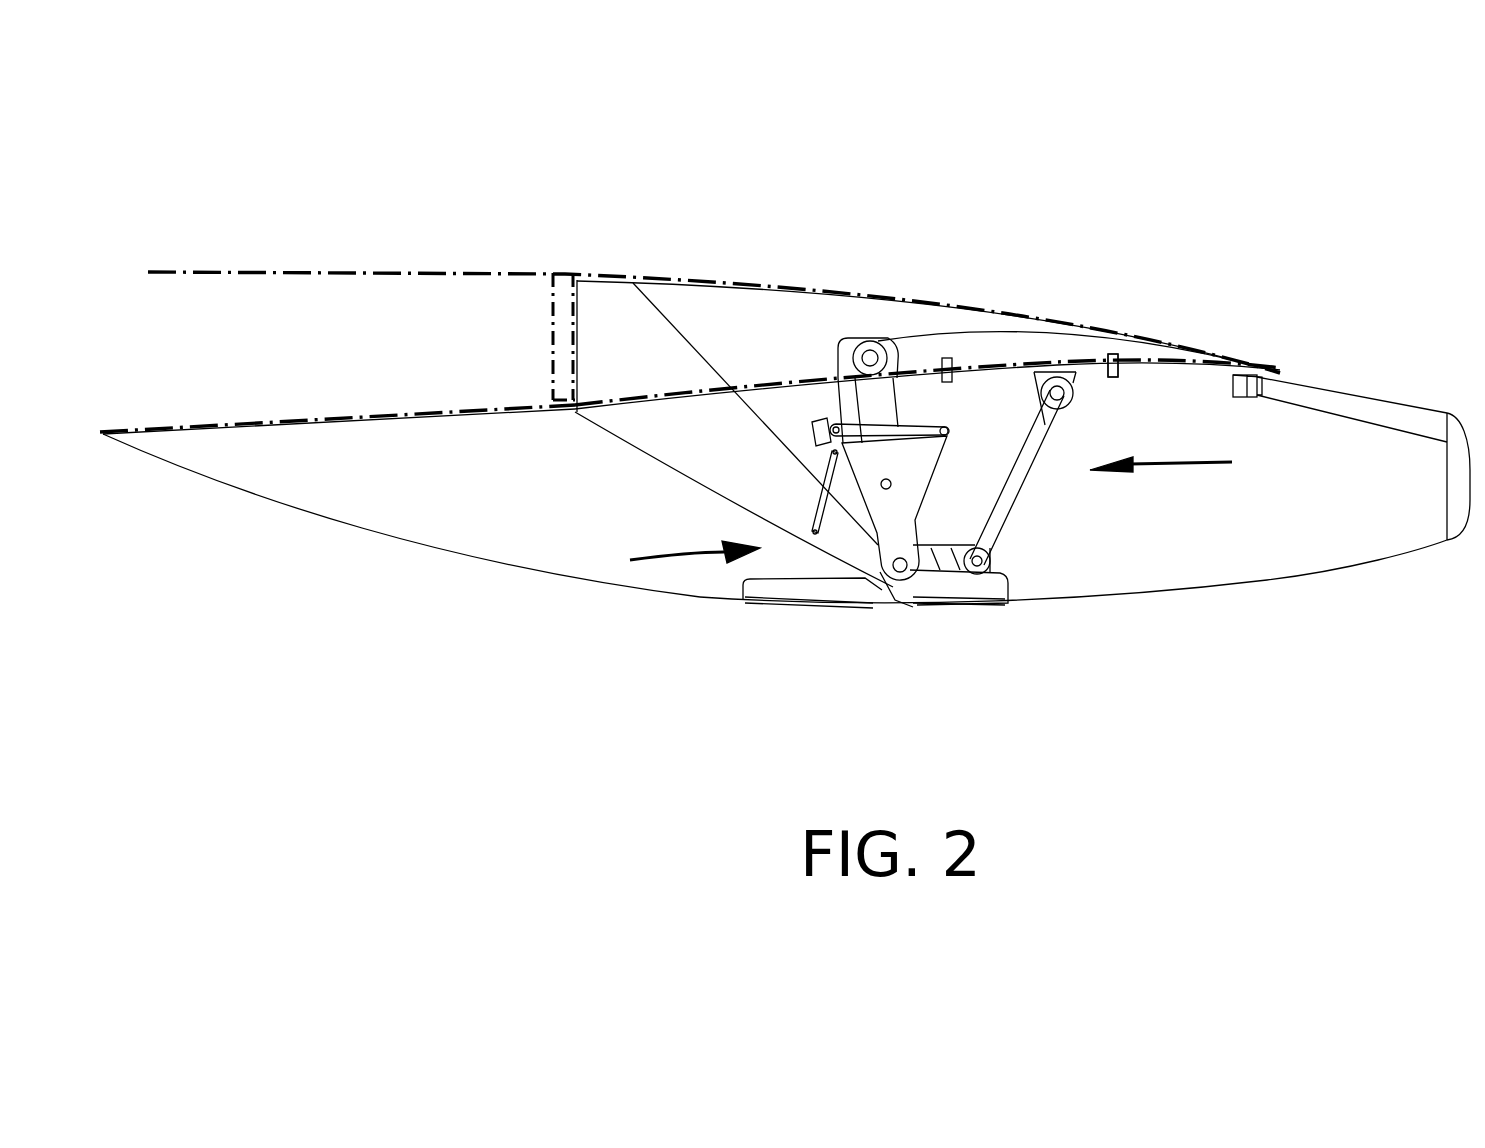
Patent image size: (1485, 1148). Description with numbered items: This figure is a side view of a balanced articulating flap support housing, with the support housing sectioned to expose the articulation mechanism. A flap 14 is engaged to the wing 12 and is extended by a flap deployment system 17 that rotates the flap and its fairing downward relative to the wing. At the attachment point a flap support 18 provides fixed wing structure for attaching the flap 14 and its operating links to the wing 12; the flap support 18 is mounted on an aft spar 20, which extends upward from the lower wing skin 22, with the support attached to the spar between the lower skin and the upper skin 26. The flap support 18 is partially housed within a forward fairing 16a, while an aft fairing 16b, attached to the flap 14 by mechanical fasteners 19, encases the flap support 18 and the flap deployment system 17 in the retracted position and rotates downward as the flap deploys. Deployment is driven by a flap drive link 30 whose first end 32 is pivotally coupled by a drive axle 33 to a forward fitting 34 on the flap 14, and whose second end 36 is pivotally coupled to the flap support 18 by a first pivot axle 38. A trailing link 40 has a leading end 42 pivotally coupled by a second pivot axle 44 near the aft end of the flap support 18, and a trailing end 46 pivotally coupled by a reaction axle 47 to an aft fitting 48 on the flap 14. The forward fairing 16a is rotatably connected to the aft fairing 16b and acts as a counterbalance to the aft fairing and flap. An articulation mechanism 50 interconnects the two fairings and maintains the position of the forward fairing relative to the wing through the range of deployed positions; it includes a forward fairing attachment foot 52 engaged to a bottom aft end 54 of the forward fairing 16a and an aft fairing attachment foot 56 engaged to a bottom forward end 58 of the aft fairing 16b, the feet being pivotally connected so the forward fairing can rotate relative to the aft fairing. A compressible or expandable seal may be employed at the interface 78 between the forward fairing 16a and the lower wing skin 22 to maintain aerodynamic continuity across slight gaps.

The wing 12 is at (463, 320).
The flap 14 is at (1100, 345).
The forward fairing 16a is at (432, 505).
The aft fairing 16b is at (1232, 552).
The flap deployment system 17 is at (1184, 463).
The flap support 18 is at (753, 468).
The mechanical fasteners 19 is at (947, 357).
The aft spar 20 is at (562, 327).
The lower wing skin 22 is at (377, 420).
The upper skin 26 is at (327, 270).
The flap drive link 30 is at (892, 512).
The first end 32 is at (883, 380).
The drive axle 33 is at (870, 380).
The forward fitting 34 is at (843, 340).
The second end 36 is at (967, 588).
The first pivot axle 38 is at (898, 567).
The trailing link 40 is at (1020, 477).
The leading end 42 is at (987, 540).
The second pivot axle 44 is at (977, 562).
The trailing end 46 is at (1045, 412).
The reaction axle 47 is at (1147, 440).
The aft fitting 48 is at (1057, 370).
The articulation mechanism 50 is at (674, 559).
The forward fairing attachment foot 52 is at (807, 587).
The bottom aft end 54 is at (843, 608).
The aft fairing attachment foot 56 is at (933, 612).
The bottom forward end 58 is at (903, 540).
The interface 78 is at (350, 430).